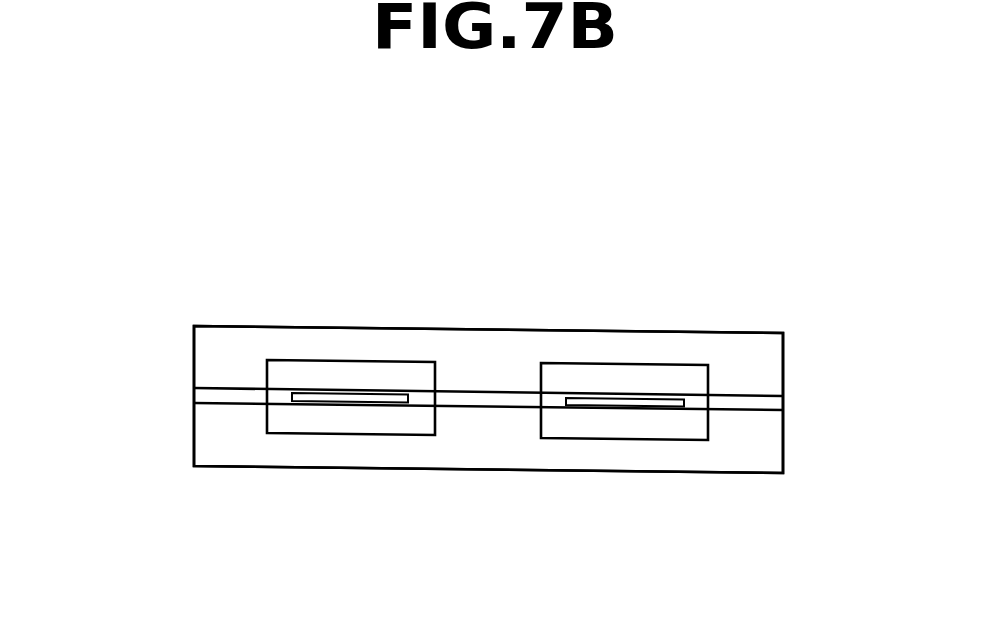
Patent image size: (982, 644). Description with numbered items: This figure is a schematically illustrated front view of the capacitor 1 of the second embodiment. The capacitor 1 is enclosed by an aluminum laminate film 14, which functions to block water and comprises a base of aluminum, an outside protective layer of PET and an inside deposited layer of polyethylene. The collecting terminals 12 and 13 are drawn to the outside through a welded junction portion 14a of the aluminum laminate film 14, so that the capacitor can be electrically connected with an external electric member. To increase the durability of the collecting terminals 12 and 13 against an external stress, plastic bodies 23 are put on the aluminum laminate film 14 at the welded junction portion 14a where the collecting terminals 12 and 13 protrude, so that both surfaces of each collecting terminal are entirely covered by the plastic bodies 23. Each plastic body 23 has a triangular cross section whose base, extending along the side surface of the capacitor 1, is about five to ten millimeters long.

The capacitor 1 is at (506, 290).
The collecting terminal 12 is at (618, 406).
The collecting terminal 13 is at (350, 402).
The aluminum laminate film 14 is at (292, 326).
The welded junction portion 14a is at (233, 388).
The plastic body 23 is at (392, 373).